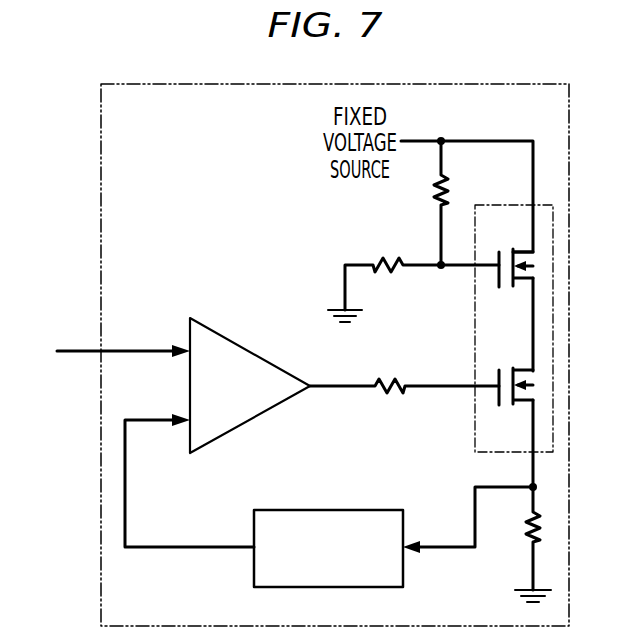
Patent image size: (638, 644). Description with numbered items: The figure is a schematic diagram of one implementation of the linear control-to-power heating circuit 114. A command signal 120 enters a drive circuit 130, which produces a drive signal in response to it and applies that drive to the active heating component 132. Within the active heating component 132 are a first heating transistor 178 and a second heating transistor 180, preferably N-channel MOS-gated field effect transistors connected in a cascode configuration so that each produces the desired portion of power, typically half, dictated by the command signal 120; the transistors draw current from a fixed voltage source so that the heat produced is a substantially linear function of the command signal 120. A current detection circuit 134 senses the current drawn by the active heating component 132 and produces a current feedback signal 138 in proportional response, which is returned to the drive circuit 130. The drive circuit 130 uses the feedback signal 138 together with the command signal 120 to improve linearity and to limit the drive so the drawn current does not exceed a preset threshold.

The linear control-to-power heating circuit 114 is at (101, 107).
The command signal 120 is at (72, 351).
The drive circuit 130 is at (247, 349).
The active heating component 132 is at (498, 205).
The current detection circuit 134 is at (333, 510).
The current feedback signal 138 is at (180, 547).
The first heating transistor 178 is at (499, 279).
The second heating transistor 180 is at (499, 398).